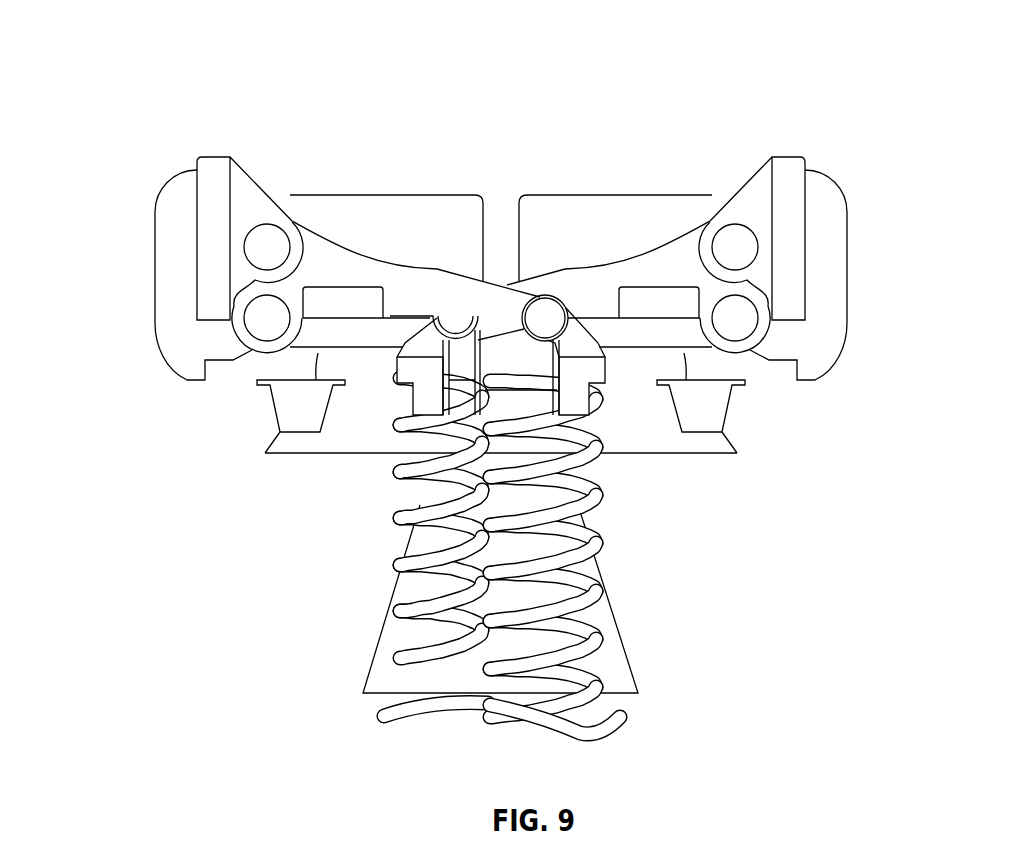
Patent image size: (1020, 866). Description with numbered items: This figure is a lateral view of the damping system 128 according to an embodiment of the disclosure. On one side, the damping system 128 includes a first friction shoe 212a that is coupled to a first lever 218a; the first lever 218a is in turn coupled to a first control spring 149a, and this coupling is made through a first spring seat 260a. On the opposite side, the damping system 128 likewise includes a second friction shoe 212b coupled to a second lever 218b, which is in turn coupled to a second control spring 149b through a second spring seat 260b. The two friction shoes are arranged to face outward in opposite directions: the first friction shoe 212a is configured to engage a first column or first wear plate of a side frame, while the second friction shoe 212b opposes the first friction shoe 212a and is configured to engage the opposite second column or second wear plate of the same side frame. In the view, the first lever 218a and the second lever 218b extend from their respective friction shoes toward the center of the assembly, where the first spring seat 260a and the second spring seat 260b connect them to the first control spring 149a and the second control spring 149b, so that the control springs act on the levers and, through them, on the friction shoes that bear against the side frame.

The damping system 128 is at (107, 63).
The first friction shoe 212a is at (794, 177).
The second friction shoe 212b is at (208, 177).
The first lever 218a is at (602, 282).
The second lever 218b is at (400, 282).
The first spring seat 260a is at (589, 372).
The second spring seat 260b is at (413, 372).
The first control spring 149a is at (603, 541).
The second control spring 149b is at (397, 564).